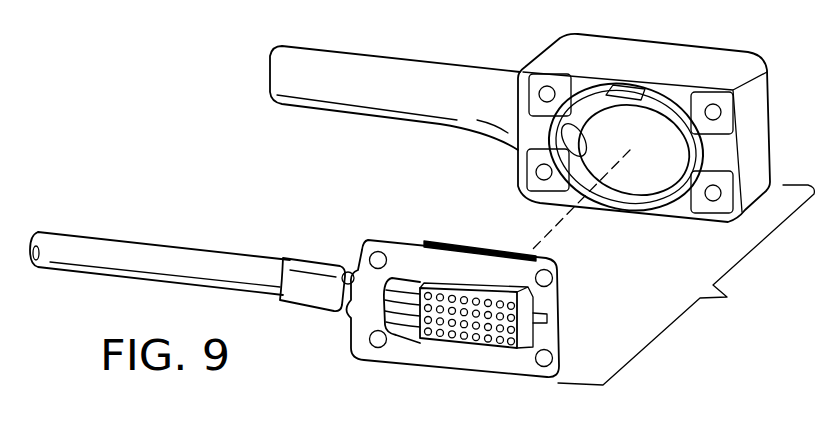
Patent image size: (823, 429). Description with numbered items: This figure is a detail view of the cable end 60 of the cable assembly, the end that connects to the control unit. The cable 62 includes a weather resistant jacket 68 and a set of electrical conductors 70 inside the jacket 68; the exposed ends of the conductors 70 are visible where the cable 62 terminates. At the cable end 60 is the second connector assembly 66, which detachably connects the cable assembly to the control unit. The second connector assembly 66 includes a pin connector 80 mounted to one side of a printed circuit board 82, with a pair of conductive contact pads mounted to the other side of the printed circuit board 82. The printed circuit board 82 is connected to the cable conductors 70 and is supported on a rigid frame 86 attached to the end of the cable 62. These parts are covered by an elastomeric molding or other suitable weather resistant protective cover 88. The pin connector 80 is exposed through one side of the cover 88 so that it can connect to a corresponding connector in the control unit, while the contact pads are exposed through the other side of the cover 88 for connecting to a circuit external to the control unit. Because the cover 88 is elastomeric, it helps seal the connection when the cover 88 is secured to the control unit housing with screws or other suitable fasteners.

The cable end 60 is at (327, 240).
The cable 62 is at (120, 250).
The second connector assembly 66 is at (672, 267).
The weather resistant jacket 68 is at (207, 265).
The electrical conductors 70 is at (408, 308).
The pin connector 80 is at (477, 335).
The printed circuit board 82 is at (480, 243).
The rigid frame 86 is at (518, 362).
The protective cover 88 is at (458, 80).